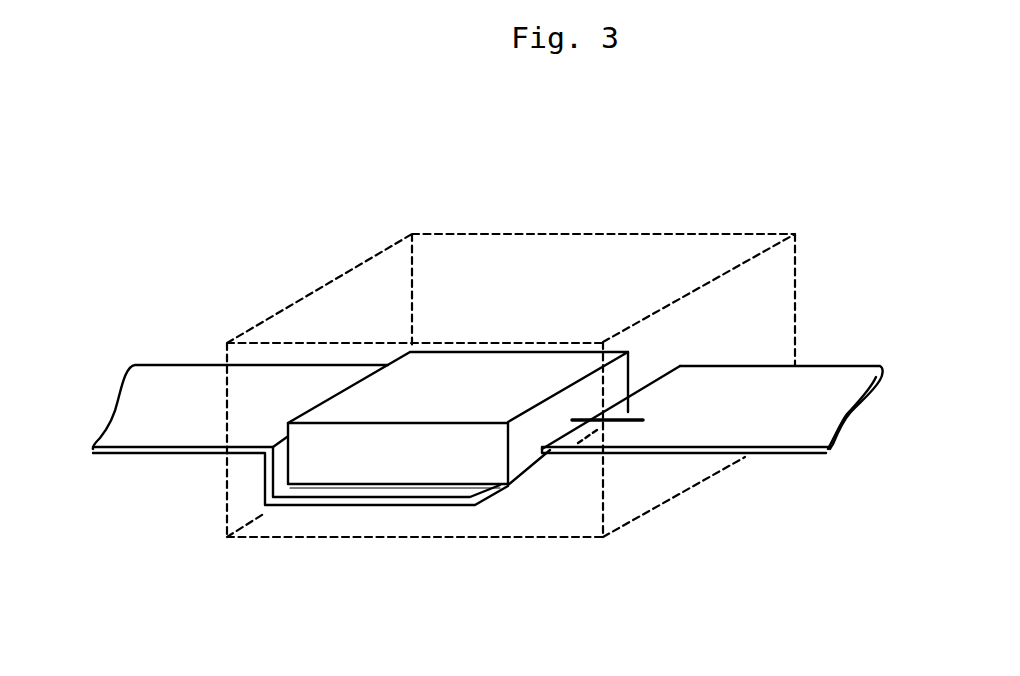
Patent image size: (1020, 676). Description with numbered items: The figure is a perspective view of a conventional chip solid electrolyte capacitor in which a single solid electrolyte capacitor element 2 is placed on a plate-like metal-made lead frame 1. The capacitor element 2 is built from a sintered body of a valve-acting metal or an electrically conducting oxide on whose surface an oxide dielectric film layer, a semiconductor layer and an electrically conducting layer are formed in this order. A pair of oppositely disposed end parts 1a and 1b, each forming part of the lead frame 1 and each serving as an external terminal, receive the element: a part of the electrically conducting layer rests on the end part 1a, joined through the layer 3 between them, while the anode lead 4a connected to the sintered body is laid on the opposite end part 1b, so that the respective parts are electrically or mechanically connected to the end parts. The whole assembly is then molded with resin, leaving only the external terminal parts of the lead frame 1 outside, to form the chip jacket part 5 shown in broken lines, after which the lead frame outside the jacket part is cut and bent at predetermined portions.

The lead frame 1 is at (457, 499).
The end part 1a is at (402, 508).
The end part 1b is at (787, 457).
The solid electrolyte capacitor element 2 is at (498, 363).
The solder layer 3 is at (443, 489).
The anode lead 4a is at (633, 422).
The chip jacket part 5 is at (647, 260).